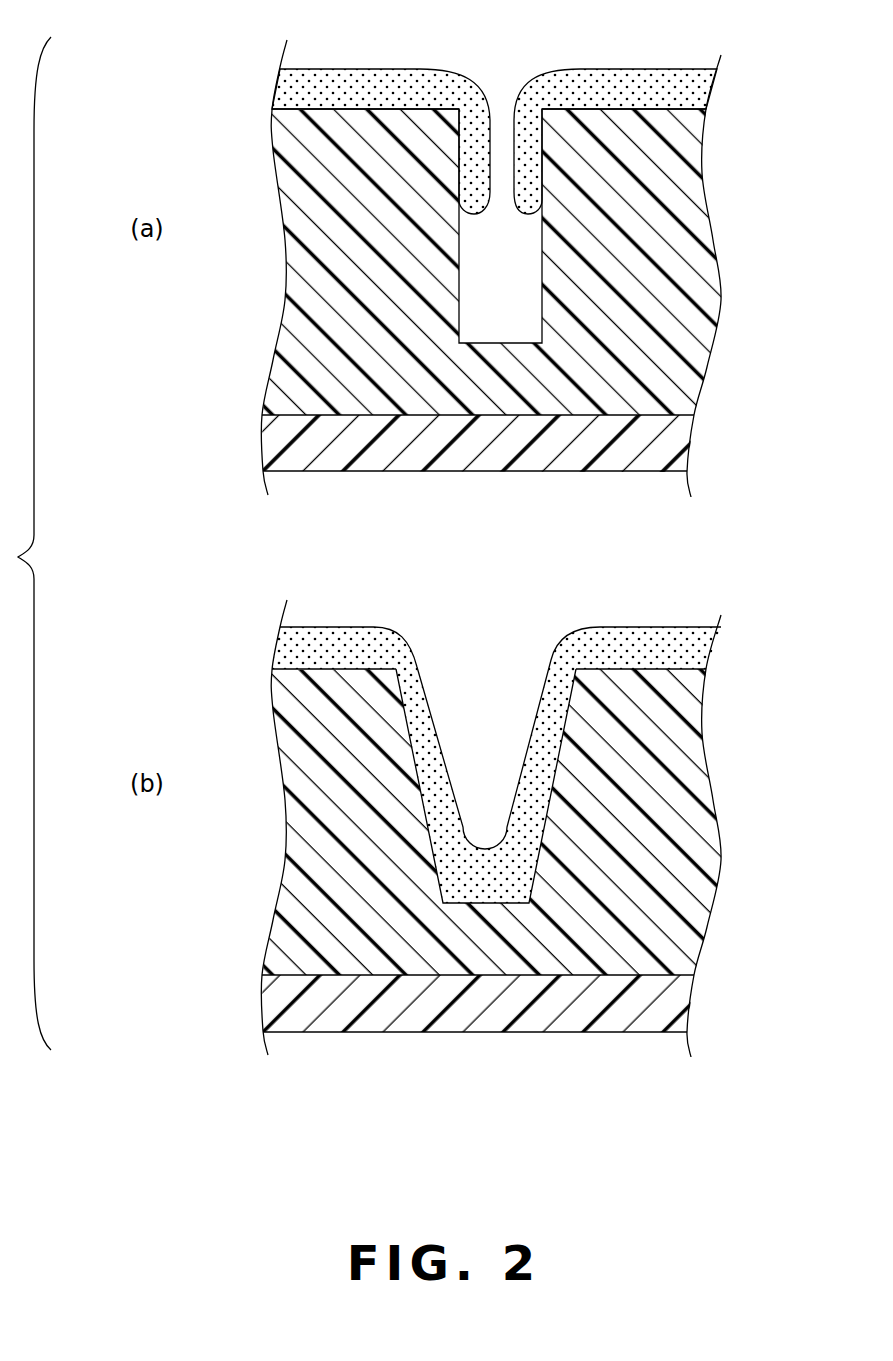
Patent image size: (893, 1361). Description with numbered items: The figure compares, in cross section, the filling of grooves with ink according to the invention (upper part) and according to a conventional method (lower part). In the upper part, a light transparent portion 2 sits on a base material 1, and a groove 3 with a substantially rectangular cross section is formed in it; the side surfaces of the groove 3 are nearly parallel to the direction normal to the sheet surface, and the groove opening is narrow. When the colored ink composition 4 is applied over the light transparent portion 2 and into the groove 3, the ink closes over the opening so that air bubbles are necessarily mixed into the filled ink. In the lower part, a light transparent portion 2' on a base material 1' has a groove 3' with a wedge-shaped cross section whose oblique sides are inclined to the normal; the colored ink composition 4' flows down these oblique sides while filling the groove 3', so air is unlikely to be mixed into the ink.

The base material 1 is at (478, 470).
The light transparent portion 2 is at (506, 268).
The groove 3 is at (543, 316).
The colored ink composition 4 is at (494, 115).
The base material 1' is at (478, 1036).
The light transparent portion 2' is at (513, 828).
The groove 3' is at (511, 883).
The colored ink composition 4' is at (496, 740).